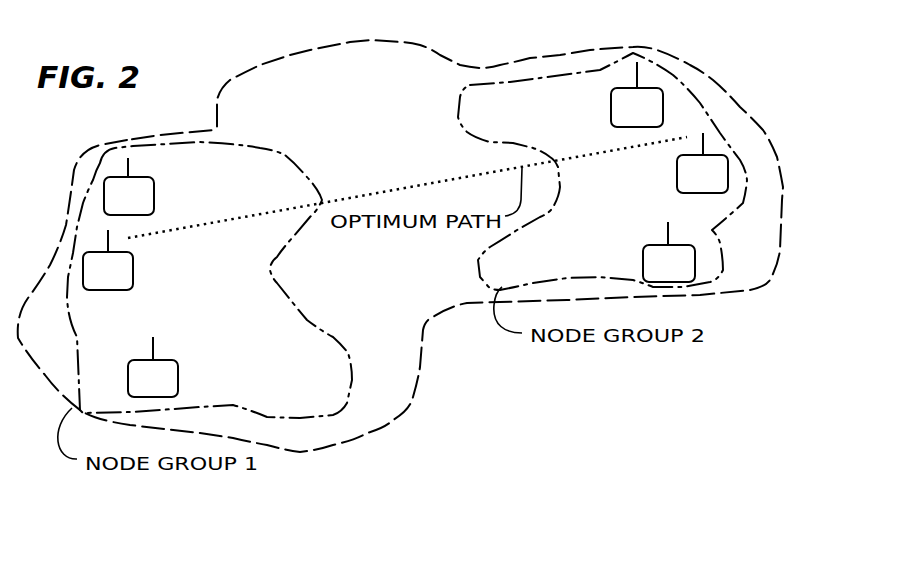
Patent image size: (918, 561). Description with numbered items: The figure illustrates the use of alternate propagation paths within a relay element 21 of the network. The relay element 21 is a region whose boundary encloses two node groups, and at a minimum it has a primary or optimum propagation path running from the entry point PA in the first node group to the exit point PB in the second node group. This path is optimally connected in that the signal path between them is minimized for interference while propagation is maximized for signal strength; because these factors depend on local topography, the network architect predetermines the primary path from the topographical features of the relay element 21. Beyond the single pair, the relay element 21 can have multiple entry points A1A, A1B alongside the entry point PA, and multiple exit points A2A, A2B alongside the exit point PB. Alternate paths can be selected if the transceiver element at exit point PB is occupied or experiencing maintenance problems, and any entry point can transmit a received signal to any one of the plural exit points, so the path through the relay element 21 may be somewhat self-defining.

The relay element 21 is at (357, 42).
The entry point A1A is at (154, 193).
The entry point PA is at (133, 270).
The entry point A1B is at (178, 378).
The exit point A2A is at (611, 106).
The exit point PB is at (677, 170).
The exit point A2B is at (643, 265).